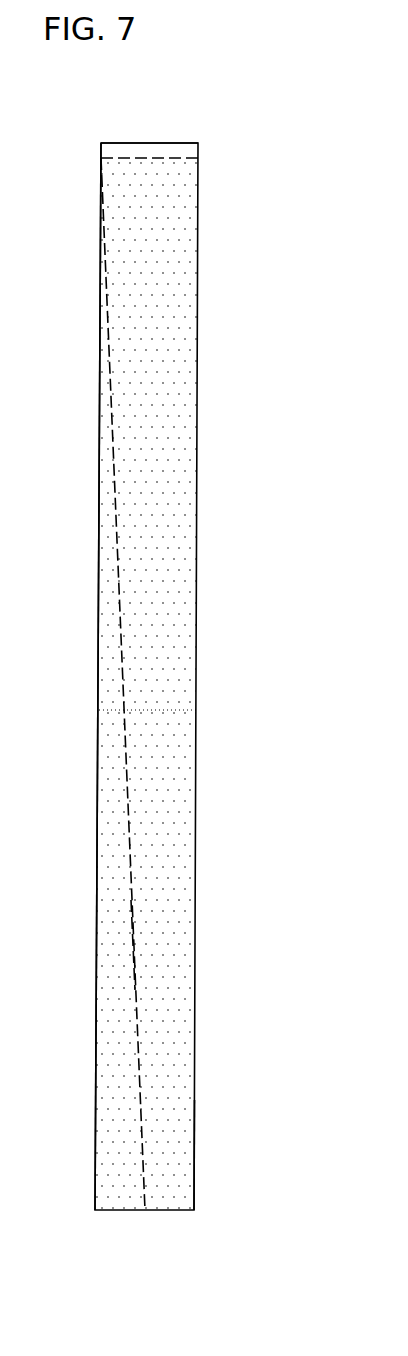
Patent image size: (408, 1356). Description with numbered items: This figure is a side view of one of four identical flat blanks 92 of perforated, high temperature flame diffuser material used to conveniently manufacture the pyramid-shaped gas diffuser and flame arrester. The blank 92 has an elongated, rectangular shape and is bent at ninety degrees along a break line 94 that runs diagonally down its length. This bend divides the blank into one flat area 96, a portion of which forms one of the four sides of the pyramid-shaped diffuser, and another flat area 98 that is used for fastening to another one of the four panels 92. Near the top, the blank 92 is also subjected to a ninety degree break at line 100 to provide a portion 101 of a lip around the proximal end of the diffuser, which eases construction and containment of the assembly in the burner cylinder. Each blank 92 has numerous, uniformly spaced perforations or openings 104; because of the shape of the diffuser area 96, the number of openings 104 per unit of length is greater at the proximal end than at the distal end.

The flat blank 92 is at (95, 1043).
The break line 94 is at (133, 942).
The flat area 96 is at (178, 660).
The flat area 98 is at (112, 780).
The break line 100 is at (167, 158).
The lip portion 101 is at (148, 150).
The perforations 104 is at (178, 1145).